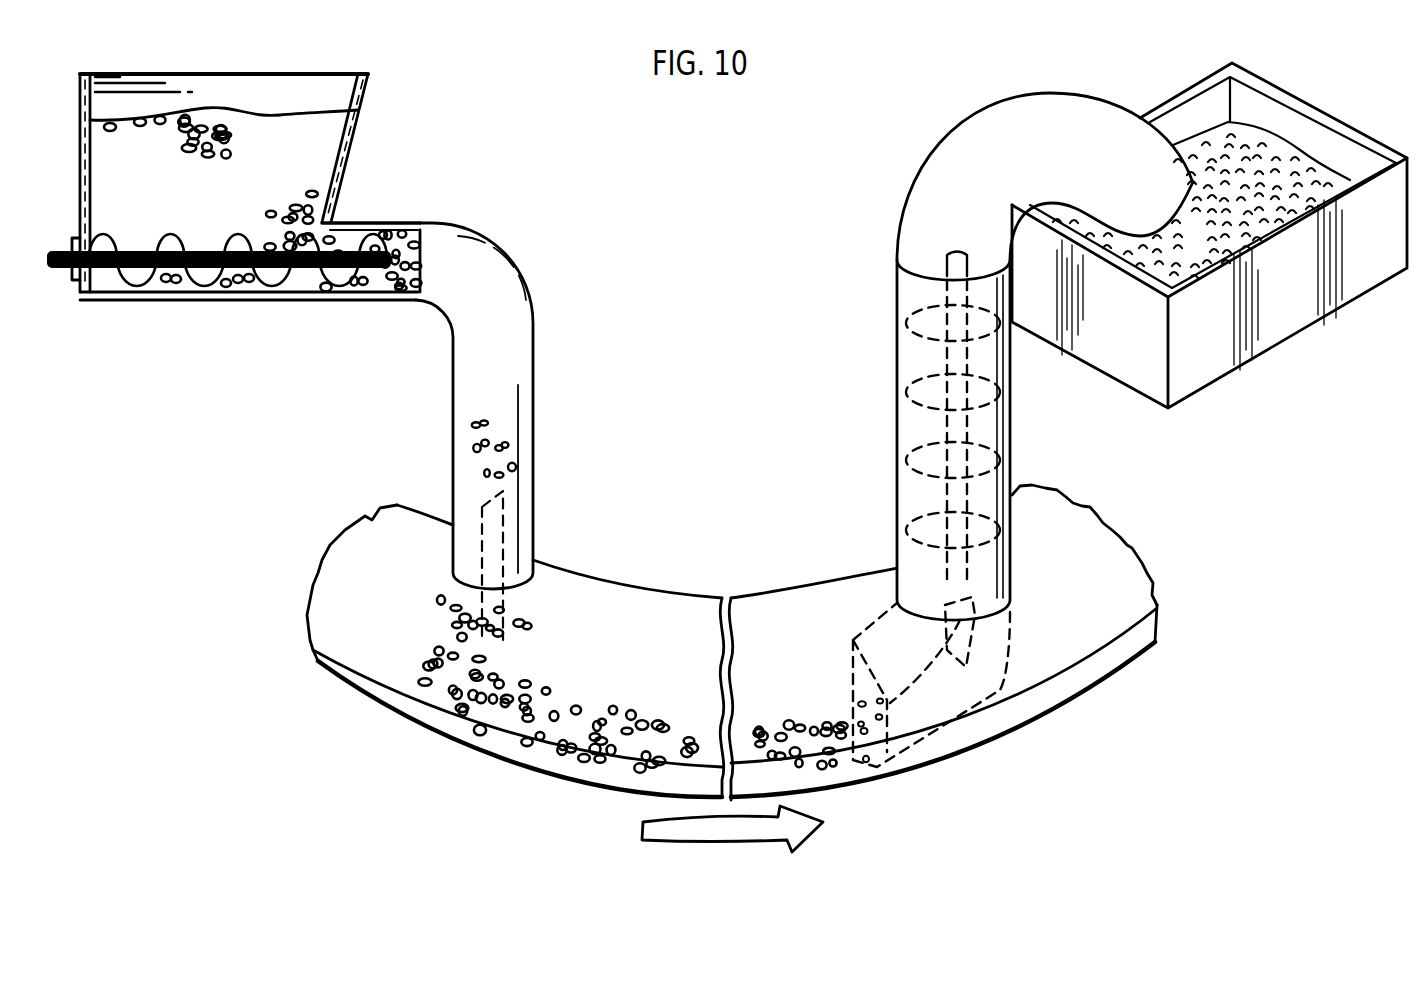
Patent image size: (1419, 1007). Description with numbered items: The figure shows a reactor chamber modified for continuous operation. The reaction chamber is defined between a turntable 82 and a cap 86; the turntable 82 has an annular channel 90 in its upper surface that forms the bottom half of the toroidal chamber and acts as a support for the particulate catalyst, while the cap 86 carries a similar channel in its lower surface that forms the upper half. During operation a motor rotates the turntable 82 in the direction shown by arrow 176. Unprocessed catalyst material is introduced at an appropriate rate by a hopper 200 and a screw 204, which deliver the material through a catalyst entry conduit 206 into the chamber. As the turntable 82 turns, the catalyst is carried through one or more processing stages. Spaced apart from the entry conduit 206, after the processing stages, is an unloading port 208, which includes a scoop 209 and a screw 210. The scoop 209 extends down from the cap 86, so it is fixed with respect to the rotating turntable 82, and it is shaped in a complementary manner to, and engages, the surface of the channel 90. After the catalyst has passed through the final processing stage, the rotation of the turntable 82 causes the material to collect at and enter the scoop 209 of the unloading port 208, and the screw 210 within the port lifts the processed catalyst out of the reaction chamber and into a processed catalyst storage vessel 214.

The turntable 82 is at (322, 663).
The cap 86 is at (1125, 573).
The annular channel 90 is at (1085, 677).
The arrow 176 is at (732, 840).
The hopper 200 is at (362, 98).
The screw 204 is at (382, 224).
The catalyst entry conduit 206 is at (533, 492).
The unloading port 208 is at (897, 337).
The scoop 209 is at (888, 727).
The screw 210 is at (905, 392).
The processed catalyst storage vessel 214 is at (1342, 312).